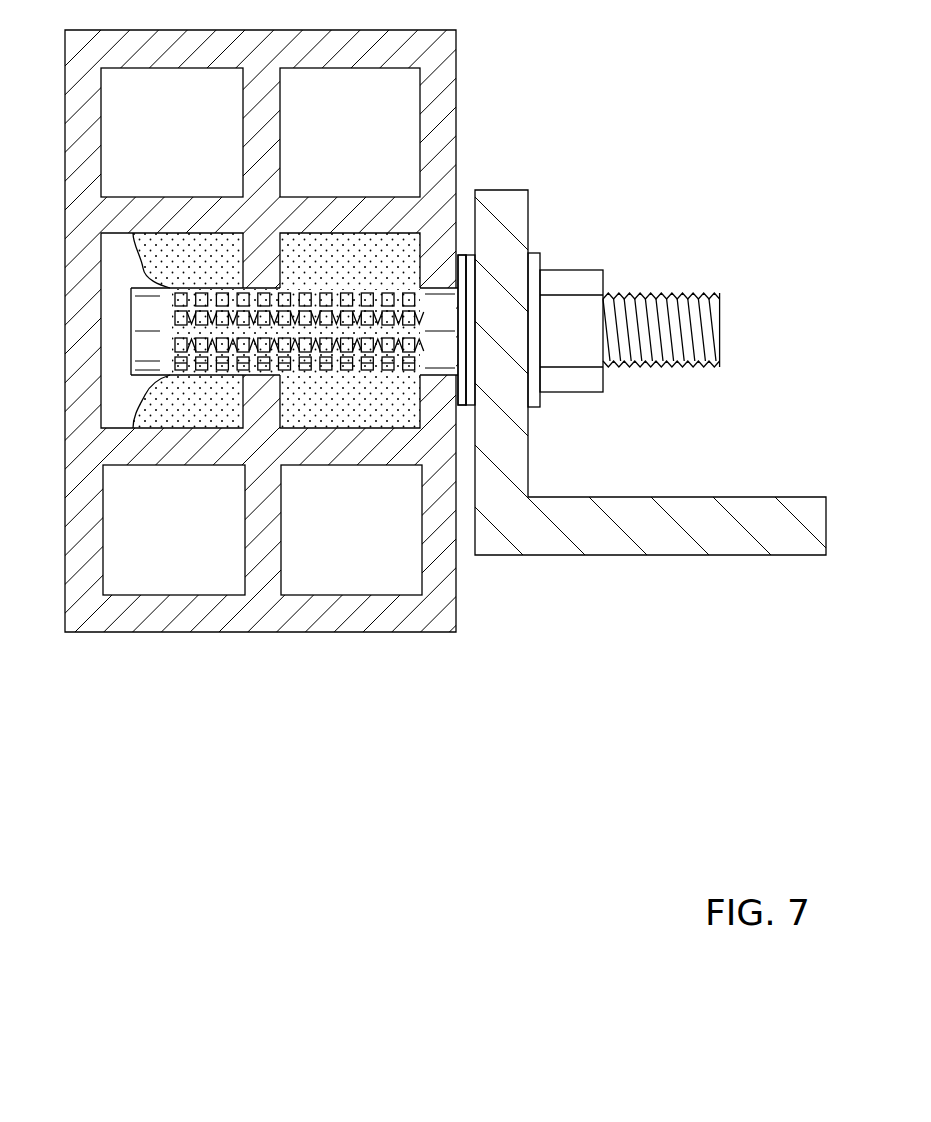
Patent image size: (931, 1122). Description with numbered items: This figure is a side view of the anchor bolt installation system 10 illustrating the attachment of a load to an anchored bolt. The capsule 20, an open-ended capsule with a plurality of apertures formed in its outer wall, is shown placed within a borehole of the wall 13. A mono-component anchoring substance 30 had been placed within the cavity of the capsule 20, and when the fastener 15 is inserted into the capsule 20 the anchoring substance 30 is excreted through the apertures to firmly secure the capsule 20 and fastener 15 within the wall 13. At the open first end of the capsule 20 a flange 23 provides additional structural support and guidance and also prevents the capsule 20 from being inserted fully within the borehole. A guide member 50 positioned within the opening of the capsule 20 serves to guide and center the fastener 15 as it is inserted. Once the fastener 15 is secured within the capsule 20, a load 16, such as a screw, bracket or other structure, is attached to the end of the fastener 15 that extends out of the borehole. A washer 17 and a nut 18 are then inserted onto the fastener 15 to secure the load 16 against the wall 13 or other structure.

The anchor bolt installation system 10 is at (612, 694).
The wall 13 is at (432, 78).
The fastener 15 is at (692, 320).
The load 16 is at (503, 203).
The washer 17 is at (543, 260).
The nut 18 is at (579, 271).
The capsule 20 is at (143, 350).
The flange 23 is at (460, 258).
The anchoring substance 30 is at (362, 262).
The guide member 50 is at (464, 407).